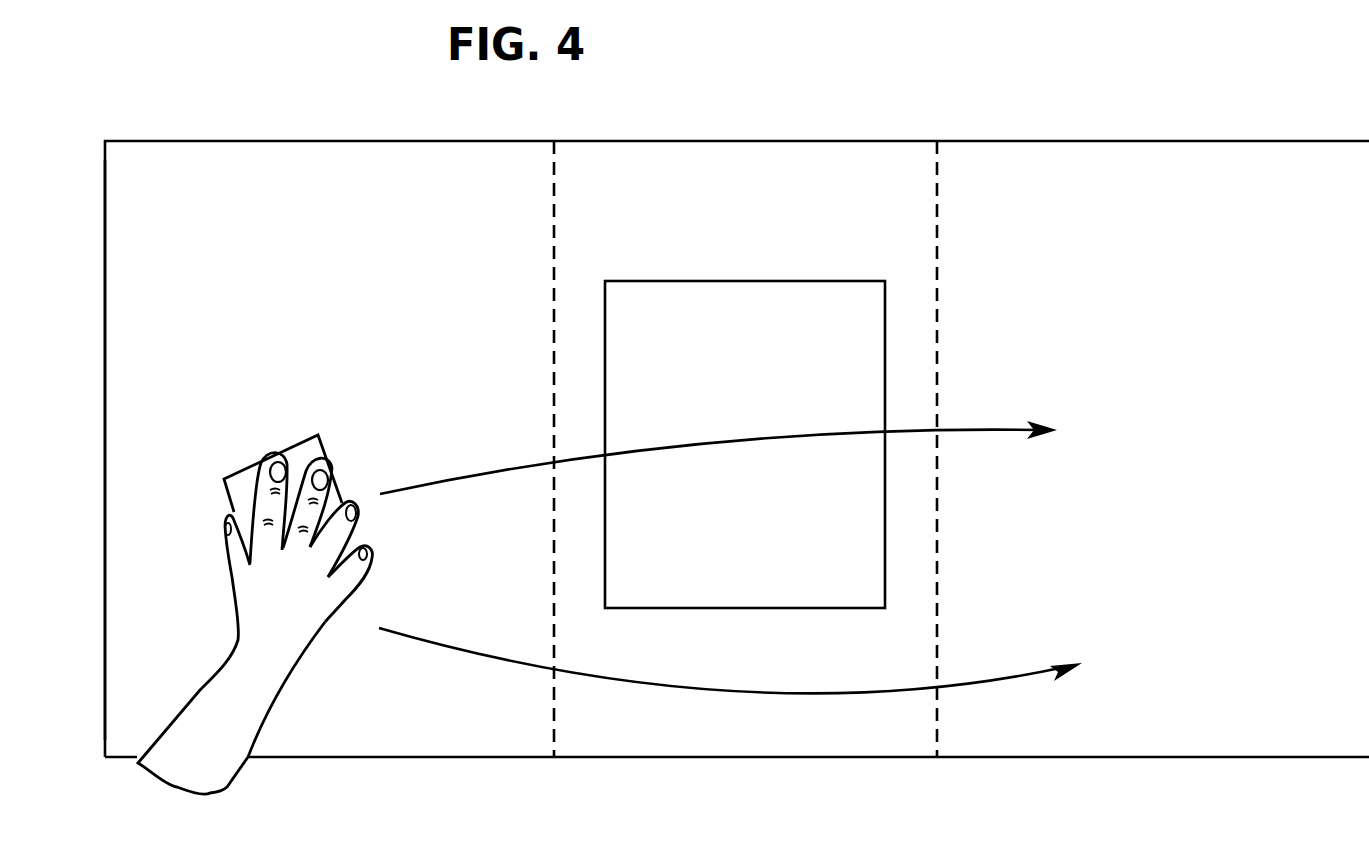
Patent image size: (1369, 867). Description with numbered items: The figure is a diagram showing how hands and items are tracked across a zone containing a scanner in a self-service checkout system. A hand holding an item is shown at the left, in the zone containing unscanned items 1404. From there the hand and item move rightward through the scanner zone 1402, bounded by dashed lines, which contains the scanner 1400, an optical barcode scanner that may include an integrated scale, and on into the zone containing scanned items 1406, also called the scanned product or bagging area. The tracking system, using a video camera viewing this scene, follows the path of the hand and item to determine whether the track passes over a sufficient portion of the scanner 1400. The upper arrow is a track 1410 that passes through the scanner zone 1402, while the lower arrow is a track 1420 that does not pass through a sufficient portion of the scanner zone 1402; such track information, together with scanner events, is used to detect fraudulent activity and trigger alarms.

The scanner 1400 is at (790, 280).
The scanner zone 1402 is at (631, 170).
The zone containing unscanned items 1404 is at (318, 174).
The zone containing scanned items 1406 is at (1168, 157).
The track which passes through the scanner zone 1410 is at (975, 426).
The track which does not pass through a sufficient portion of the scanner zone 1420 is at (988, 681).